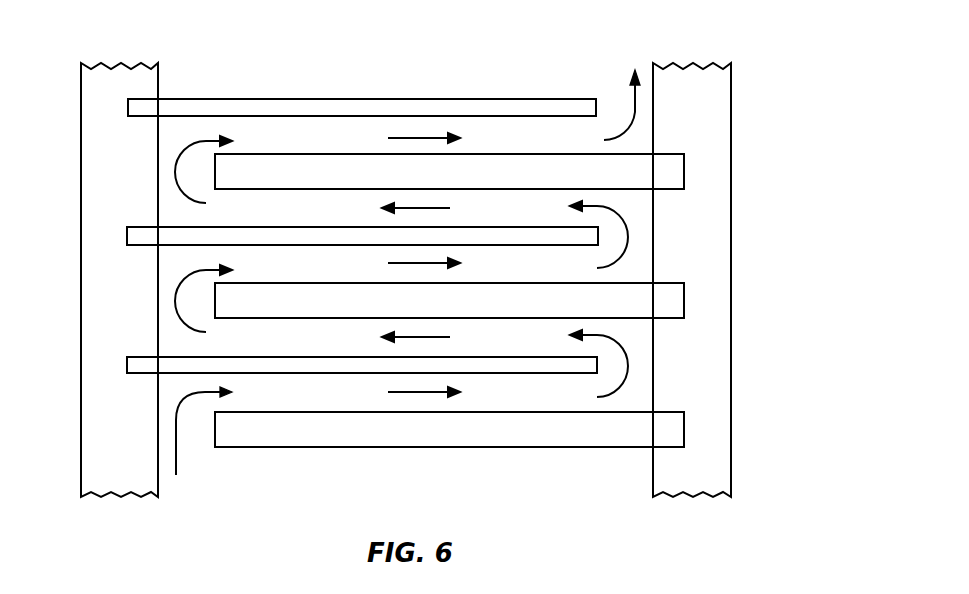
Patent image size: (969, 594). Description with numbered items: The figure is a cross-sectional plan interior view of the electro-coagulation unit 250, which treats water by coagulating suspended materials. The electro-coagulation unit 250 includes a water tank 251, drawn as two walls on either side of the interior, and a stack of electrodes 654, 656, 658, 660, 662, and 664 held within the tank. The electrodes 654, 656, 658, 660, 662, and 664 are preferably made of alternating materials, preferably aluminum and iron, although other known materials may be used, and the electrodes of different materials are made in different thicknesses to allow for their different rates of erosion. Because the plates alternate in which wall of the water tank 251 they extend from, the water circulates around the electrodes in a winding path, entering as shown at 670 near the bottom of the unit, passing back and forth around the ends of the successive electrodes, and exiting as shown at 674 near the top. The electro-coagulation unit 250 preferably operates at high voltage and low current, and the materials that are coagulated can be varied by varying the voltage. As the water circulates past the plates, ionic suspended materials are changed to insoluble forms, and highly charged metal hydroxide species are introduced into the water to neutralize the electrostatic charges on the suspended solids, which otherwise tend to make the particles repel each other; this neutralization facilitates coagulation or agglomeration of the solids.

The electro-coagulation unit 250 is at (788, 68).
The water tank 251 is at (88, 262).
The electrode 654 is at (455, 447).
The electrode 656 is at (313, 356).
The electrode 658 is at (340, 282).
The electrode 660 is at (320, 226).
The electrode 662 is at (449, 157).
The electrode 664 is at (375, 99).
The water circulation path 670 is at (176, 463).
The water circulation path 674 is at (637, 90).